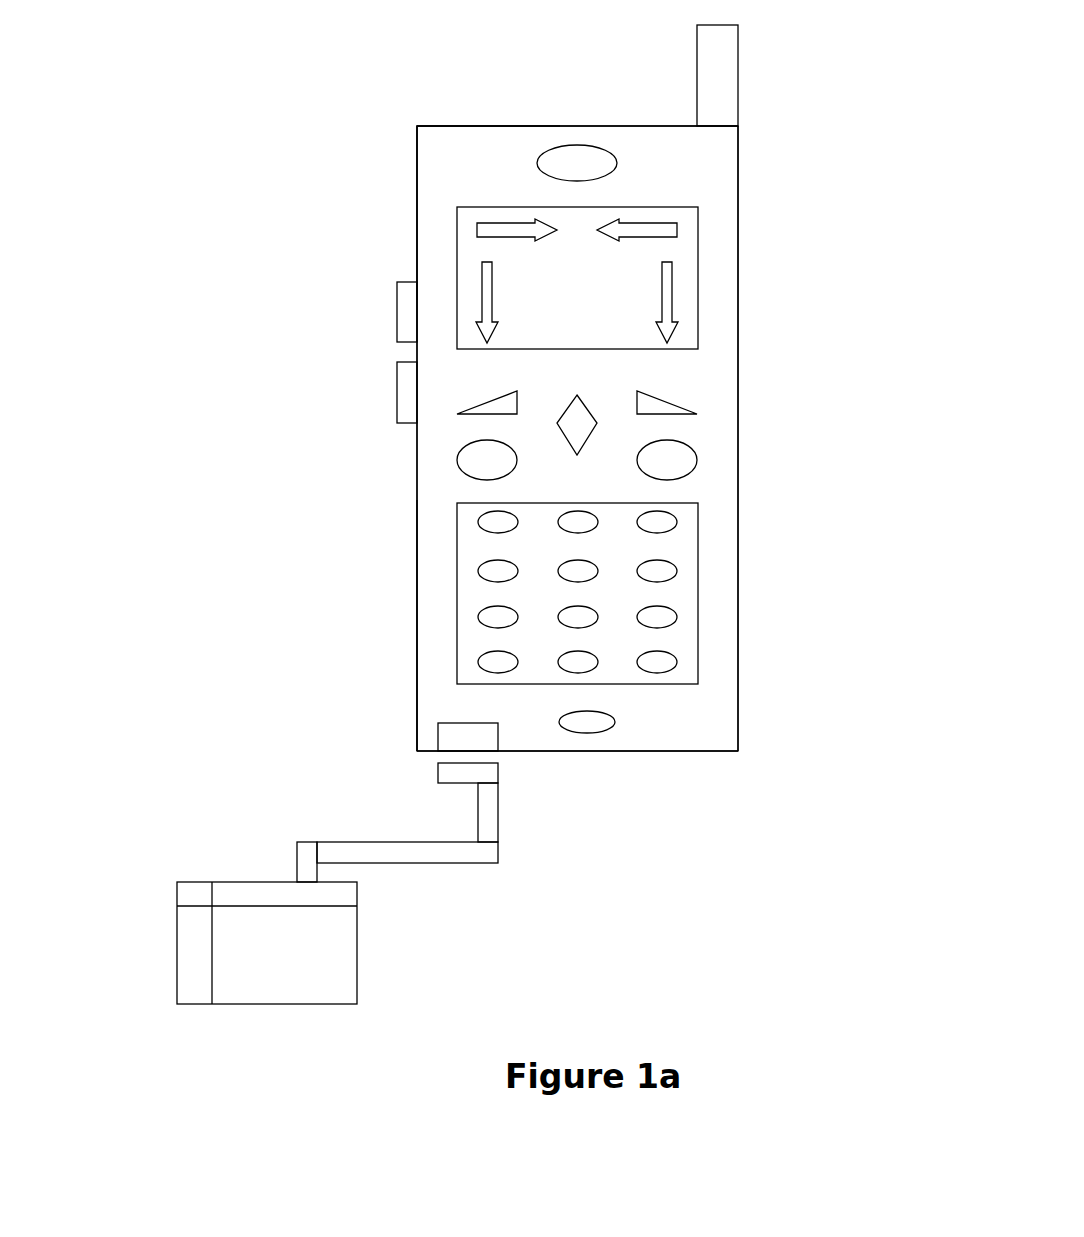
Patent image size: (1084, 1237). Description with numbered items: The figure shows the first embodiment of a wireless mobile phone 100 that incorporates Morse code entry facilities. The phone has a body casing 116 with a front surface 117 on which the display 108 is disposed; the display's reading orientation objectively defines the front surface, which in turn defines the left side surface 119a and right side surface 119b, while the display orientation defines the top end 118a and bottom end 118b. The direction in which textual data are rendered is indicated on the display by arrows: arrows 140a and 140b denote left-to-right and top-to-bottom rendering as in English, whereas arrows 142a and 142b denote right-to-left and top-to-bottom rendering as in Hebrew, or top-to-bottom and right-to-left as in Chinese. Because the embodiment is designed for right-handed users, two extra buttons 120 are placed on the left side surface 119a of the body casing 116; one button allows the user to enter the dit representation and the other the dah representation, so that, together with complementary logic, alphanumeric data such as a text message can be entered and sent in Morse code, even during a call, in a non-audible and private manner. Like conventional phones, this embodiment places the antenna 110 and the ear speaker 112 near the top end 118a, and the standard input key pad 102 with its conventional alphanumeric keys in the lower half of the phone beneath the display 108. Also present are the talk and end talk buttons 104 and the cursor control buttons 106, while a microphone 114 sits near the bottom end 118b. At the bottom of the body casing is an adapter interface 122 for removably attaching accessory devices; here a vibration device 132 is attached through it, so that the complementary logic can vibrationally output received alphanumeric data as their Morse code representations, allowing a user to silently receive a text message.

The wireless mobile phone 100 is at (172, 114).
The input key pad 102 is at (698, 622).
The talk and end talk buttons 104 is at (462, 460).
The cursor control buttons 106 is at (462, 405).
The display 108 is at (517, 221).
The antenna 110 is at (738, 57).
The ear speaker 112 is at (597, 160).
The microphone 114 is at (615, 722).
The body casing 116 is at (478, 170).
The front surface 117 is at (438, 643).
The top end 118a is at (460, 118).
The bottom end 118b is at (700, 763).
The left side surface 119a is at (417, 503).
The right side surface 119b is at (738, 485).
The buttons 120 is at (397, 380).
The adapter interface 122 is at (438, 742).
The vibration device 132 is at (275, 882).
The arrow 140a is at (477, 238).
The arrow 140b is at (477, 283).
The arrow 142a is at (677, 220).
The arrow 142b is at (672, 282).